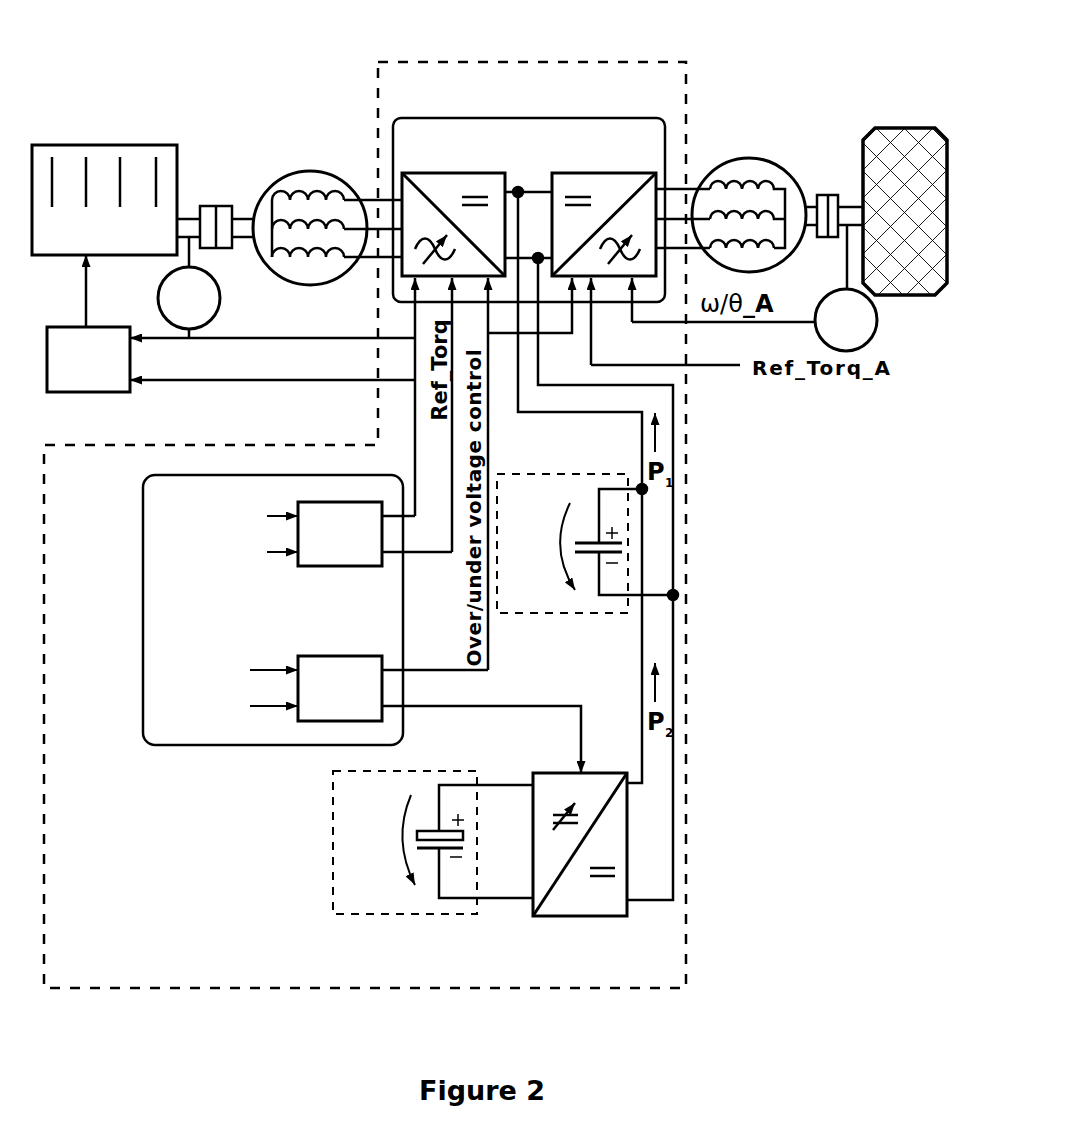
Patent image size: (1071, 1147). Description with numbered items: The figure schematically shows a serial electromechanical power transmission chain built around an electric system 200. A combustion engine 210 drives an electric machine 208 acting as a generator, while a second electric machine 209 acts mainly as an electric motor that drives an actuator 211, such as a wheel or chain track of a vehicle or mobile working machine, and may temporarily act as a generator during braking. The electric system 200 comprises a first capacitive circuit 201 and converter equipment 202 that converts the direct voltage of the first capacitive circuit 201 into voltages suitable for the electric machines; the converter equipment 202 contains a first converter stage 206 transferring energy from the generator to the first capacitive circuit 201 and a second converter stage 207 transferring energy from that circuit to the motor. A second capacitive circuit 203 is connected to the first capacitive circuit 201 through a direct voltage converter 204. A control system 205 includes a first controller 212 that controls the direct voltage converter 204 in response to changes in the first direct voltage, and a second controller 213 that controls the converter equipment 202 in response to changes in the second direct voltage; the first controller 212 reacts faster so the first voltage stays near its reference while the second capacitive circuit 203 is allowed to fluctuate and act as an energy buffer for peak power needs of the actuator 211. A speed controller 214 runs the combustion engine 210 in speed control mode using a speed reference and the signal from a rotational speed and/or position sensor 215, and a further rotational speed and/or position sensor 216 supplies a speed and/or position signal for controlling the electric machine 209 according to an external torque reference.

The electric system 200 is at (548, 62).
The first capacitive circuit 201 is at (593, 474).
The converter equipment 202 is at (529, 118).
The second capacitive circuit 203 is at (388, 914).
The direct voltage converter 204 is at (590, 916).
The control system 205 is at (143, 545).
The first converter stage 206 is at (472, 173).
The second converter stage 207 is at (602, 173).
The electric machine 208 is at (325, 172).
The electric machine 209 is at (747, 158).
The combustion engine 210 is at (84, 245).
The actuator 211 is at (908, 128).
The first controller 212 is at (320, 704).
The second controller 213 is at (320, 550).
The speed controller 214 is at (68, 373).
The rotational speed and/or position sensor 215 is at (169, 313).
The rotational speed and/or position sensor 216 is at (826, 330).